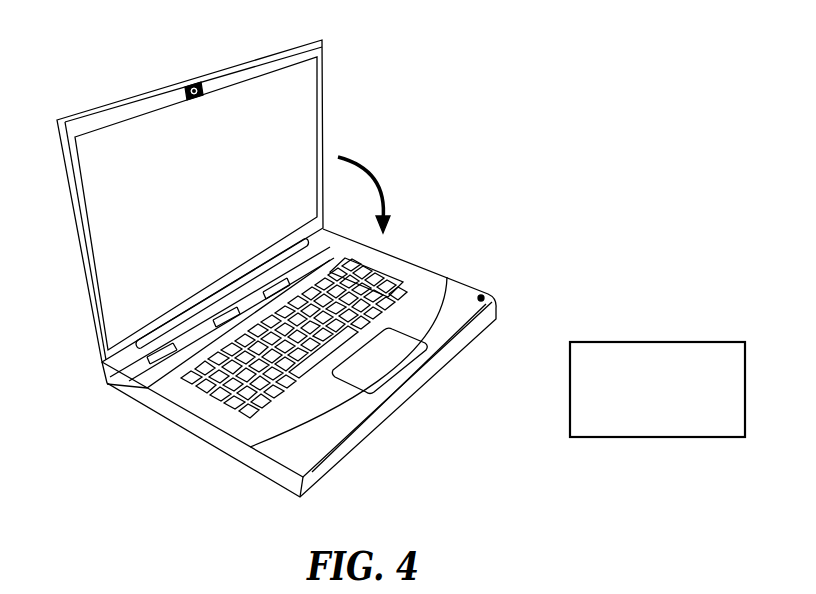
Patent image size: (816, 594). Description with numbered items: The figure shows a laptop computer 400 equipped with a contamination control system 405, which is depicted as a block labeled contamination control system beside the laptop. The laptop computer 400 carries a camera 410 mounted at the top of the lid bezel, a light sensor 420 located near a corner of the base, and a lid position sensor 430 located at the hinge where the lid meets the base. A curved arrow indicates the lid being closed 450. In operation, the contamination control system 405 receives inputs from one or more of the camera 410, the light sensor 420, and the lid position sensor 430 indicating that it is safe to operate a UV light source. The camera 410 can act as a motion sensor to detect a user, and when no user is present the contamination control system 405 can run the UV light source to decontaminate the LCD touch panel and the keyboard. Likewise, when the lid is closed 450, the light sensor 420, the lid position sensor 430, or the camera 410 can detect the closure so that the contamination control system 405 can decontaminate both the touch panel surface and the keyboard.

The laptop computer 400 is at (121, 533).
The contamination control system 405 is at (582, 342).
The camera 410 is at (192, 86).
The light sensor 420 is at (482, 296).
The lid position sensor 430 is at (101, 363).
The lid closed 450 is at (373, 181).